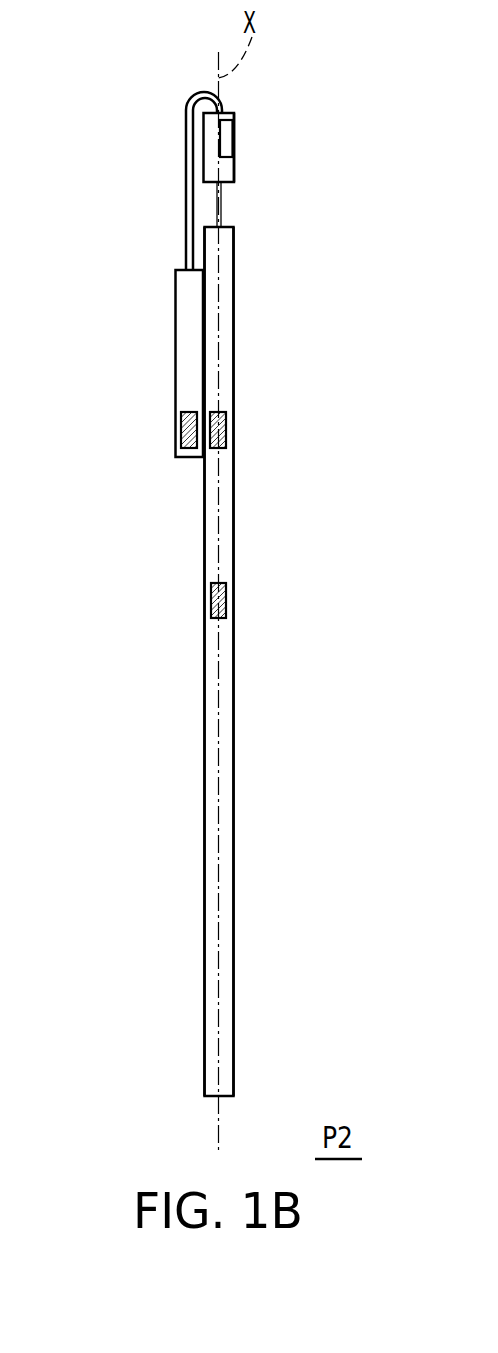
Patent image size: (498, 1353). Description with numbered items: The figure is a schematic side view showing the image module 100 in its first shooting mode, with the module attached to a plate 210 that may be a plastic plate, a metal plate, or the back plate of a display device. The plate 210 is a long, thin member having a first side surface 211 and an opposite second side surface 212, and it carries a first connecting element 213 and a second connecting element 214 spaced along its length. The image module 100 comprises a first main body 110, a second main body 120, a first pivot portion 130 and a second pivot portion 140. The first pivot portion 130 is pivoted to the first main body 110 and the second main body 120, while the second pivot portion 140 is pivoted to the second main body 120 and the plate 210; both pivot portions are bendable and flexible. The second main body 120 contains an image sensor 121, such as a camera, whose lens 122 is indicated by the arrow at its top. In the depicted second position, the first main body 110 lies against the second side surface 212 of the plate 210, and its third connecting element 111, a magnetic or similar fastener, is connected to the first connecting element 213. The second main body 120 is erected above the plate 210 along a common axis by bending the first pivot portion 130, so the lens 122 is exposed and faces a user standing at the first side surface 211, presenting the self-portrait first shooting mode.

The image module 100 is at (158, 222).
The first main body 110 is at (188, 348).
The third connecting element 111 is at (190, 432).
The second main body 120 is at (227, 170).
The image sensor 121 is at (227, 148).
The lens 122 is at (238, 131).
The first pivot portion 130 is at (190, 170).
The second pivot portion 140 is at (222, 218).
The plate 210 is at (210, 747).
The first side surface 211 is at (236, 734).
The second side surface 212 is at (202, 800).
The first connecting element 213 is at (222, 427).
The second connecting element 214 is at (222, 602).